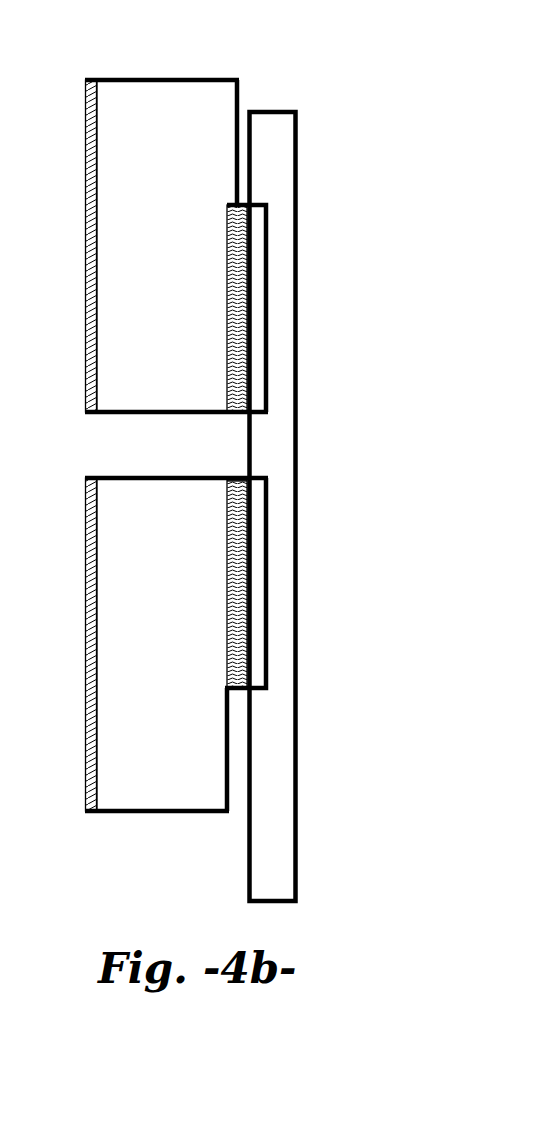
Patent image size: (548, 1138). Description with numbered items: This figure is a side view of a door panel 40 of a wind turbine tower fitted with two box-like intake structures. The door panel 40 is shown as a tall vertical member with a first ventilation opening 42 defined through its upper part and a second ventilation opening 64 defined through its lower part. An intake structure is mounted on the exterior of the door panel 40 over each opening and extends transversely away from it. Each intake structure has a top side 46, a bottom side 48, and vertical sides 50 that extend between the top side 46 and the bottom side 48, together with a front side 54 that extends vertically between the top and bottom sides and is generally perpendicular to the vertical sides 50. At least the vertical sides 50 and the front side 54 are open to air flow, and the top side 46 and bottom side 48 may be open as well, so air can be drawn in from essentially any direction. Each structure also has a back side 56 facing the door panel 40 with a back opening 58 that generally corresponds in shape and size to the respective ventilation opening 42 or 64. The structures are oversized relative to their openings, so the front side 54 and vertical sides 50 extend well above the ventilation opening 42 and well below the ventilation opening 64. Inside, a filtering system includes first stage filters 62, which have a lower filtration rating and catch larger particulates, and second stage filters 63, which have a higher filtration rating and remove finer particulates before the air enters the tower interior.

The door panel 40 is at (278, 150).
The ventilation opening 42 is at (268, 244).
The top side 46 is at (165, 78).
The bottom side 48 is at (178, 414).
The vertical sides 50 is at (181, 326).
The front side 54 is at (84, 192).
The back side 56 is at (229, 760).
The back opening 58 is at (247, 512).
The first stage filters 62 is at (237, 272).
The second stage filters 63 is at (97, 210).
The second ventilation opening 64 is at (270, 530).